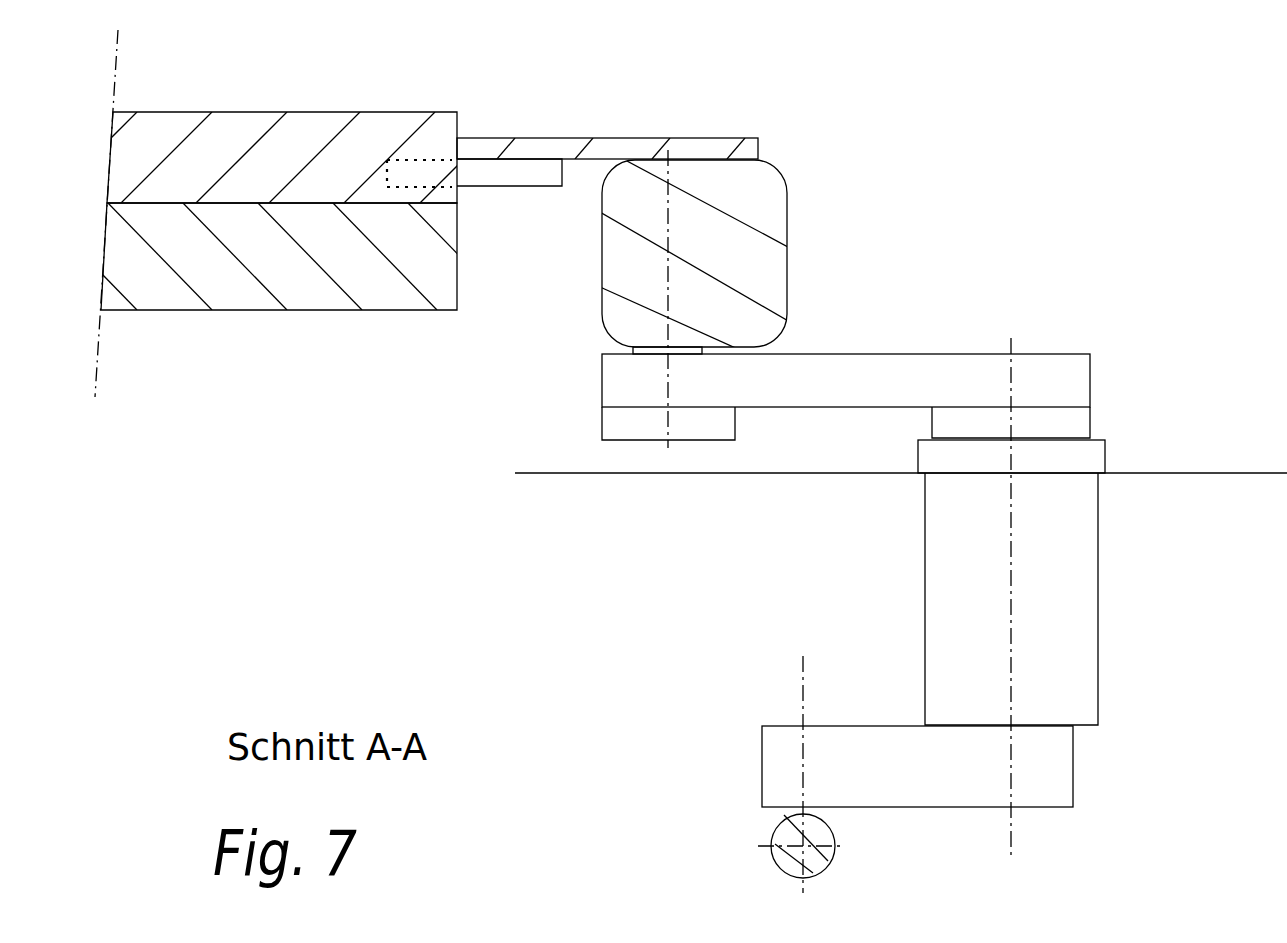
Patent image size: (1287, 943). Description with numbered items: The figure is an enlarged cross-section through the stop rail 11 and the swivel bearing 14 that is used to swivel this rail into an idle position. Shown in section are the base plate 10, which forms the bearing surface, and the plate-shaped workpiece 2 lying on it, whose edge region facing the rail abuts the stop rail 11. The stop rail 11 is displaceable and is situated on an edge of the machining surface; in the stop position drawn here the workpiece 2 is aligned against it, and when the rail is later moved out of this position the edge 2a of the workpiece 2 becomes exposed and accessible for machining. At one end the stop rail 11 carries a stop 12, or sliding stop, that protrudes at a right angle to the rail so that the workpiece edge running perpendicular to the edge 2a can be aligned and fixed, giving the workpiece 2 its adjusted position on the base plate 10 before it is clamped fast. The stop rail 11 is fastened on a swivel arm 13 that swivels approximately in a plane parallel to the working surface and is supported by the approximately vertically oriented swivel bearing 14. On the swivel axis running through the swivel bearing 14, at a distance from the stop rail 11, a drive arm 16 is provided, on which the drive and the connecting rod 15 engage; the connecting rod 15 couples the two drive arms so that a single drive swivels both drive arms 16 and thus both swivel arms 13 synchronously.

The workpiece 2 is at (370, 142).
The edge of the workpiece 2a is at (457, 125).
The base plate 10 is at (393, 289).
The stop rail 11 is at (557, 147).
The stop 12 is at (515, 168).
The swivel arm 13 is at (848, 375).
The swivel bearing 14 is at (1072, 557).
The connecting rod 15 is at (784, 838).
The drive arm 16 is at (867, 758).